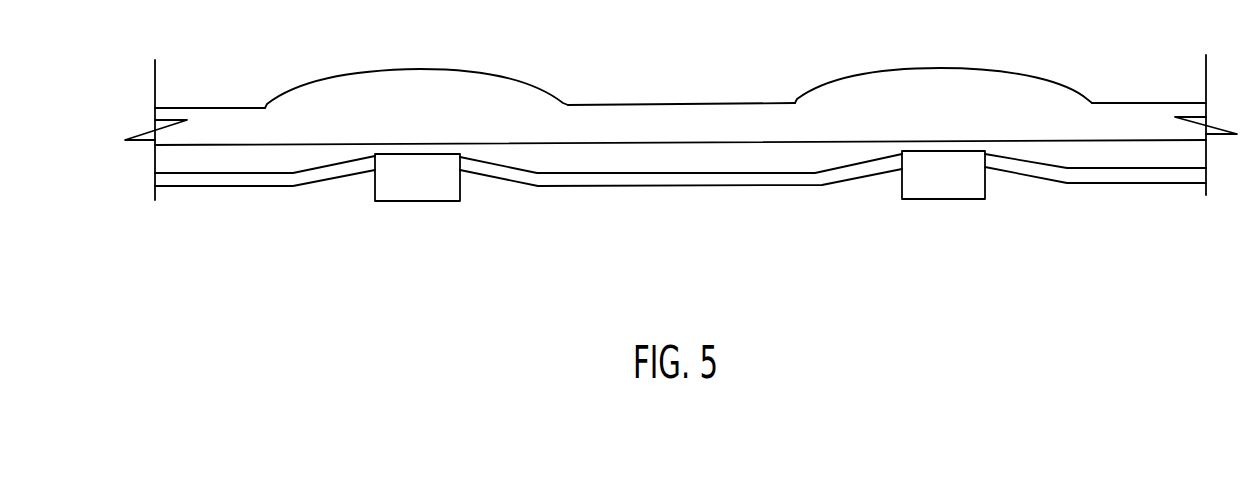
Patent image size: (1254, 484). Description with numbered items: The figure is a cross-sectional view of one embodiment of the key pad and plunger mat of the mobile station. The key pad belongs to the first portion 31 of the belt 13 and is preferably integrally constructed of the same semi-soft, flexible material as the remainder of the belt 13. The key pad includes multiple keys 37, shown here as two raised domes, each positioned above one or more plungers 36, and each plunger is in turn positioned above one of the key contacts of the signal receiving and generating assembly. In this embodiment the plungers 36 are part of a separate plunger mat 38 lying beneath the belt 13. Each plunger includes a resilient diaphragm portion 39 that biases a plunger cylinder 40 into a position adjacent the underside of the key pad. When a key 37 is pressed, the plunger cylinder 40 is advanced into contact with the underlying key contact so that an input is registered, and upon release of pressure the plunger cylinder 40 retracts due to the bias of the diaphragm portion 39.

The belt 13 is at (603, 120).
The first portion 31 is at (220, 123).
The plunger 36 is at (680, 224).
The key 37 is at (455, 85).
The plunger mat 38 is at (1142, 176).
The resilient diaphragm portion 39 is at (520, 175).
The plunger cylinder 40 is at (423, 201).